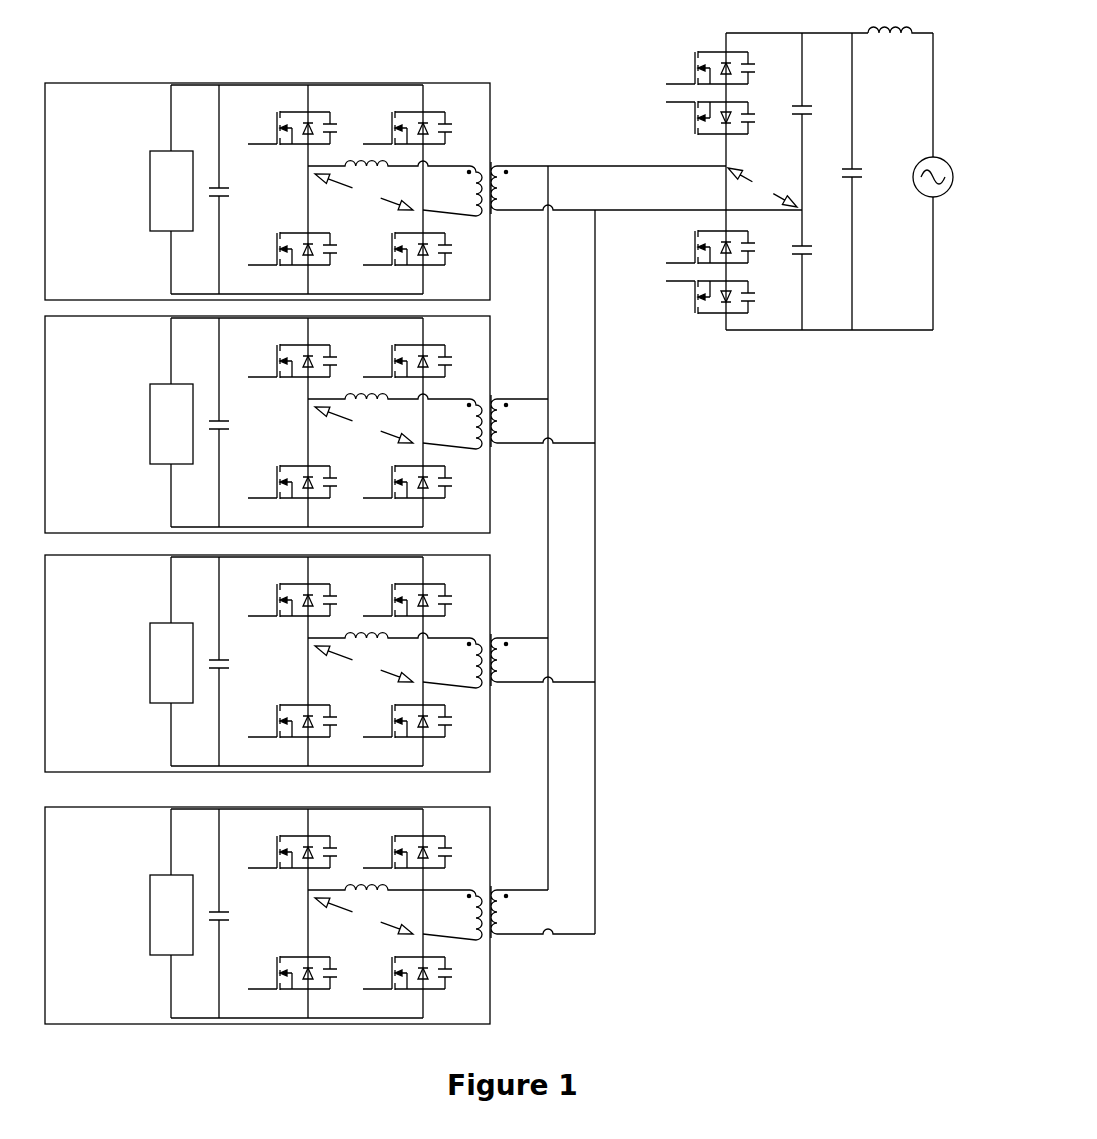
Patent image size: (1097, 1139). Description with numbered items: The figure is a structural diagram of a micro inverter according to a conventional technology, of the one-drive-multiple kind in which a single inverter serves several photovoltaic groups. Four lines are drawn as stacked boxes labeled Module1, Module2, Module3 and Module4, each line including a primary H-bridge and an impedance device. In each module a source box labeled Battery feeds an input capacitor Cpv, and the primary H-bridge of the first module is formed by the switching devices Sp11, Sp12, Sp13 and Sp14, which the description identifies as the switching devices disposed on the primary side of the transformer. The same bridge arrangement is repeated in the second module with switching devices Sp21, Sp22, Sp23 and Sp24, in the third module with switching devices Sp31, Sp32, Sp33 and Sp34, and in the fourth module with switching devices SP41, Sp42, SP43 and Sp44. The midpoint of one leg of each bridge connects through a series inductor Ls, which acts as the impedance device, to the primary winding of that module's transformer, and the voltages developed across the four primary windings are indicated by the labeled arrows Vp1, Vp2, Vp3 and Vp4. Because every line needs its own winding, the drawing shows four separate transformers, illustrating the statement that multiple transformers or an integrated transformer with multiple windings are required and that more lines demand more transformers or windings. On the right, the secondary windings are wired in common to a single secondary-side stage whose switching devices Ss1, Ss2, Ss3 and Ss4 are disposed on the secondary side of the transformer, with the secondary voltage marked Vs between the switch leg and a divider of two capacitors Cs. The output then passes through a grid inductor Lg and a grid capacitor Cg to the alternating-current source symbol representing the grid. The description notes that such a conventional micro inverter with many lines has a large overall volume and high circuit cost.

The power module #1 Module1 is at (267, 191).
The power module #2 Module2 is at (267, 424).
The power module #3 Module3 is at (267, 663).
The power module #4 Module4 is at (267, 915).
The battery Battery is at (171, 553).
The input capacitor Cpv is at (233, 551).
The switching device Sp11 is at (284, 128).
The switching device Sp12 is at (284, 249).
The switching device Sp13 is at (399, 128).
The switching device Sp14 is at (399, 249).
The primary switch Sp21 is at (284, 361).
The primary switch Sp22 is at (284, 482).
The primary switch Sp23 is at (399, 361).
The primary switch Sp24 is at (399, 482).
The primary switch Sp31 is at (284, 600).
The primary switch Sp32 is at (284, 721).
The primary switch Sp33 is at (399, 600).
The primary switch Sp34 is at (399, 721).
The primary switch SP41 is at (282, 852).
The primary switch Sp42 is at (284, 973).
The primary switch SP43 is at (397, 852).
The primary switch Sp44 is at (399, 973).
The series inductor Ls is at (389, 518).
The primary voltage Vp1 is at (364, 192).
The primary voltage Vp2 is at (364, 425).
The primary voltage Vp3 is at (364, 669).
The primary voltage Vp4 is at (364, 916).
The switching device Ss1 is at (702, 68).
The switching device Ss2 is at (702, 118).
The switching device Ss3 is at (702, 247).
The switching device Ss4 is at (702, 297).
The secondary capacitor Cs is at (815, 181).
The grid capacitor Cg is at (865, 181).
The grid inductor Lg is at (900, 18).
The secondary voltage Vs is at (762, 187).